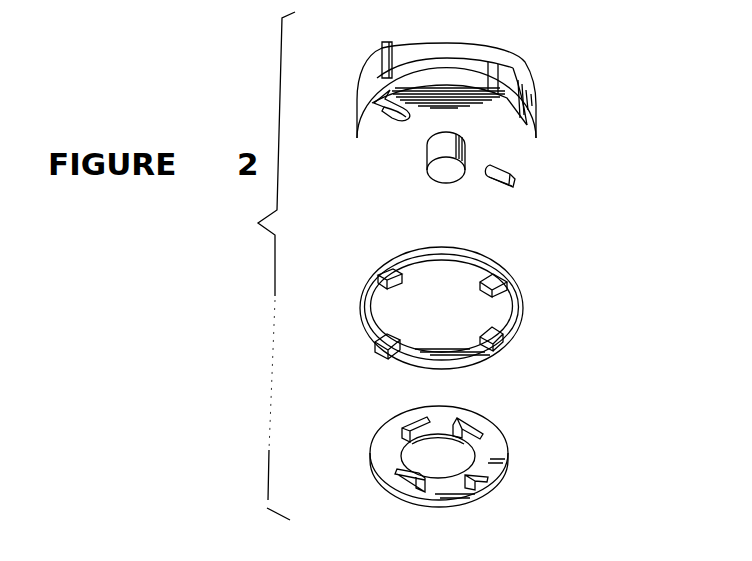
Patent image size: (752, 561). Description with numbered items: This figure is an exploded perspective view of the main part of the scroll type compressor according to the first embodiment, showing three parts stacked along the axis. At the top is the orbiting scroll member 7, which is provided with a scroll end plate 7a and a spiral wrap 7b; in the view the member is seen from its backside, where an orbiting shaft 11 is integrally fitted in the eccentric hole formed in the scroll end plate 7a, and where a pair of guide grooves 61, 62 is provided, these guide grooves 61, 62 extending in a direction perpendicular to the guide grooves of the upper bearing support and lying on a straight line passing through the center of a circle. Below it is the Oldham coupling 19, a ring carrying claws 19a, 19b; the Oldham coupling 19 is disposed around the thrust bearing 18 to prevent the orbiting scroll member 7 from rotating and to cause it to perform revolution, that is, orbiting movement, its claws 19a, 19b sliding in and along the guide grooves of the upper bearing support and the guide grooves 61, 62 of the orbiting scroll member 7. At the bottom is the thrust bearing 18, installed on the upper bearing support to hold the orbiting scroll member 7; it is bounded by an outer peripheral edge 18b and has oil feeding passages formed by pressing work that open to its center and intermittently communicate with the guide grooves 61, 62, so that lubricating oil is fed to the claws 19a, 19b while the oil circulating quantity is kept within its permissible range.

The orbiting scroll member 7 is at (515, 70).
The scroll end plate 7a is at (533, 108).
The spiral wrap 7b is at (370, 68).
The guide groove 61 is at (377, 103).
The guide groove 62 is at (513, 184).
The orbiting shaft 11 is at (430, 150).
The Oldham coupling 19 is at (523, 300).
The claw 19a is at (382, 277).
The claw 19b is at (482, 286).
The thrust bearing 18 is at (504, 430).
The outer peripheral edge 18b is at (495, 468).